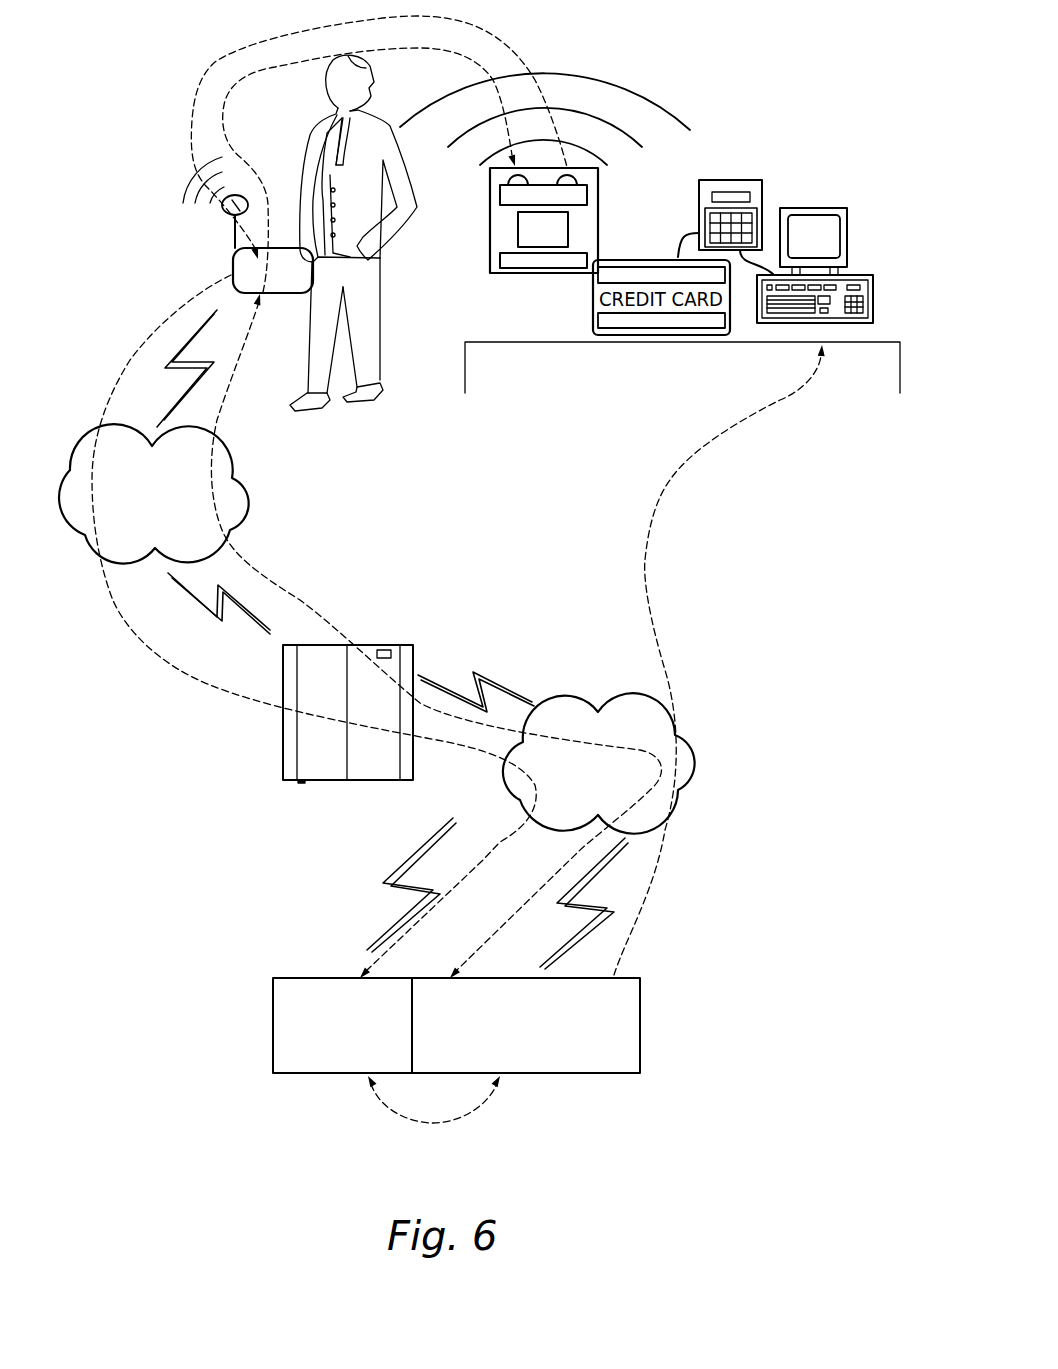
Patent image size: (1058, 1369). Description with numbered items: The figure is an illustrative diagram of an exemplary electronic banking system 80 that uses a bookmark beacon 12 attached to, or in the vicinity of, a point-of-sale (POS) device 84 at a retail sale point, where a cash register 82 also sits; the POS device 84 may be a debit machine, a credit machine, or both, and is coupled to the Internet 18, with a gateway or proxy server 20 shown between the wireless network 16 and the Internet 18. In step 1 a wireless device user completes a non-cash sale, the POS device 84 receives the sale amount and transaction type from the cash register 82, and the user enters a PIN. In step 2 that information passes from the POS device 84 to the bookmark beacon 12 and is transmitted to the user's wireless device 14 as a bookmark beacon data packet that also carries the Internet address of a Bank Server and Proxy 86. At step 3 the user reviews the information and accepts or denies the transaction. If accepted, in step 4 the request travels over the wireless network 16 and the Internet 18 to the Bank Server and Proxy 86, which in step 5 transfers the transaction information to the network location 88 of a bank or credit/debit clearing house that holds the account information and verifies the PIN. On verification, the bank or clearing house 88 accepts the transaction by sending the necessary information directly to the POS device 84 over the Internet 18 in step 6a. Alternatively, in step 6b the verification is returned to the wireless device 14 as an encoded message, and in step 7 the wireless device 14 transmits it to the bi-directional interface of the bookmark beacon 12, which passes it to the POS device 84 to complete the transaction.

The point-of-sale system 80 is at (712, 55).
The bookmark beacon 12 is at (598, 196).
The wireless device 14 is at (233, 268).
The wireless network 16 is at (250, 497).
The Internet 18 is at (694, 760).
The gateway or proxy server 20 is at (380, 645).
The cash register 82 is at (847, 241).
The point-of-sale (POS) device 84 is at (730, 180).
The Bank Server and Proxy 86 is at (313, 978).
The bank or credit/debit clearing house 88 is at (640, 1031).
The step 1 is at (647, 228).
The step 2 is at (379, 146).
The step 3 is at (360, 233).
The step 4 is at (314, 626).
The step 5 is at (434, 1126).
The step 6a is at (719, 660).
The step 6b is at (436, 636).
The step 7 is at (402, 78).